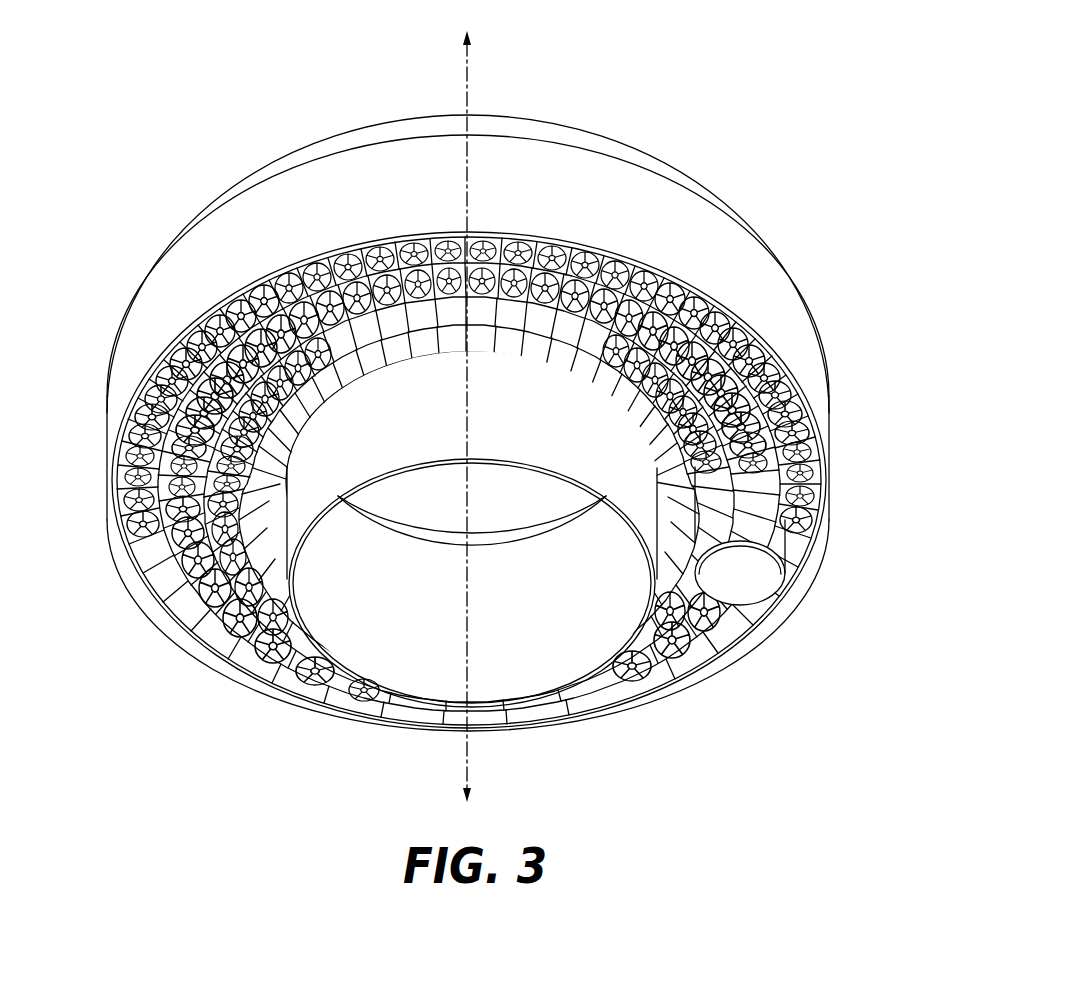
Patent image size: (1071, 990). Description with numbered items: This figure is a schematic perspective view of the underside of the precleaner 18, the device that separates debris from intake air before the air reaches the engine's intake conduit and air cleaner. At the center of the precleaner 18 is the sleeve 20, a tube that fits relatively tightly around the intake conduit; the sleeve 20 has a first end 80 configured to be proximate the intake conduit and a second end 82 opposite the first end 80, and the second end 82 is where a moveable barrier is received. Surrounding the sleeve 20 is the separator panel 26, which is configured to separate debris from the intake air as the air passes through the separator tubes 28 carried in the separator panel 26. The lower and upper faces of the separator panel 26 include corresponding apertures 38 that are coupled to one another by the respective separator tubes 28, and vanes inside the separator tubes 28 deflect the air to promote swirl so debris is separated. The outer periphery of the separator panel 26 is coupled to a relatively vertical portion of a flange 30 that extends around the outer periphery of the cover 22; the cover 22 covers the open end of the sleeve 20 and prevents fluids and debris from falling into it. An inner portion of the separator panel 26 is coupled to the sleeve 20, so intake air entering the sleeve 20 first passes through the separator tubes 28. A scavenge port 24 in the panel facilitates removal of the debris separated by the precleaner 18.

The precleaner 18 is at (688, 61).
The sleeve 20 is at (614, 464).
The cover 22 is at (406, 124).
The scavenge port 24 is at (792, 537).
The separator panel 26 is at (574, 236).
The separator tubes 28 is at (645, 285).
The flange 30 is at (110, 386).
The apertures 38 is at (800, 414).
The first end 80 is at (519, 690).
The second end 82 is at (559, 534).